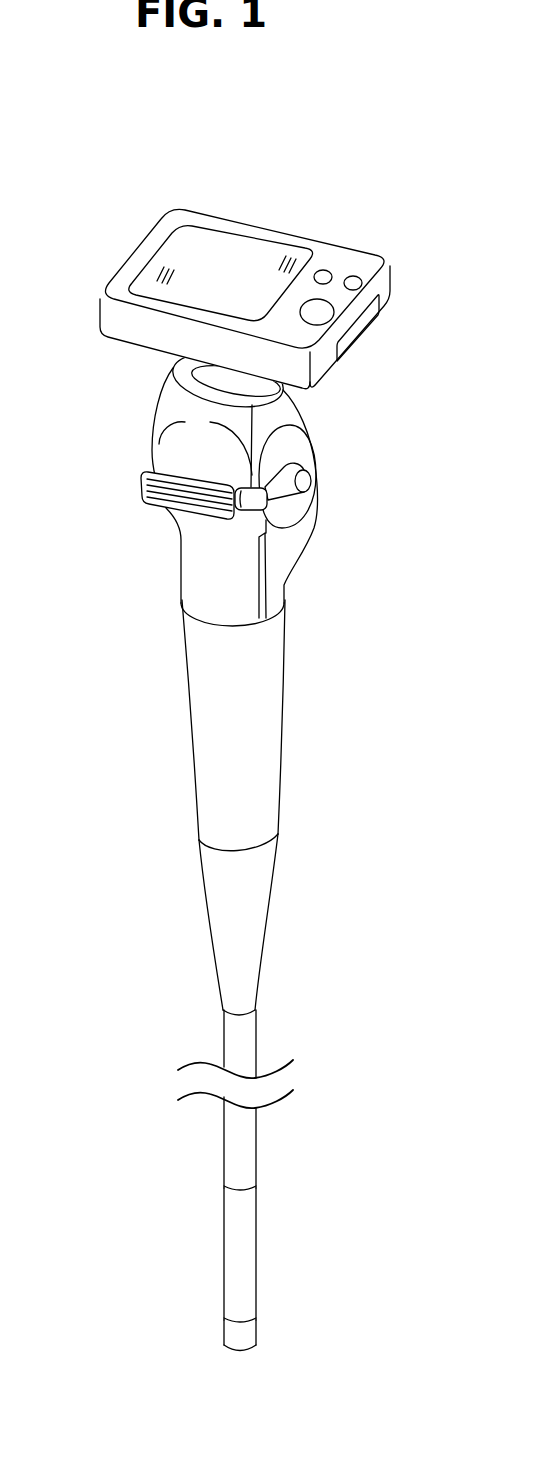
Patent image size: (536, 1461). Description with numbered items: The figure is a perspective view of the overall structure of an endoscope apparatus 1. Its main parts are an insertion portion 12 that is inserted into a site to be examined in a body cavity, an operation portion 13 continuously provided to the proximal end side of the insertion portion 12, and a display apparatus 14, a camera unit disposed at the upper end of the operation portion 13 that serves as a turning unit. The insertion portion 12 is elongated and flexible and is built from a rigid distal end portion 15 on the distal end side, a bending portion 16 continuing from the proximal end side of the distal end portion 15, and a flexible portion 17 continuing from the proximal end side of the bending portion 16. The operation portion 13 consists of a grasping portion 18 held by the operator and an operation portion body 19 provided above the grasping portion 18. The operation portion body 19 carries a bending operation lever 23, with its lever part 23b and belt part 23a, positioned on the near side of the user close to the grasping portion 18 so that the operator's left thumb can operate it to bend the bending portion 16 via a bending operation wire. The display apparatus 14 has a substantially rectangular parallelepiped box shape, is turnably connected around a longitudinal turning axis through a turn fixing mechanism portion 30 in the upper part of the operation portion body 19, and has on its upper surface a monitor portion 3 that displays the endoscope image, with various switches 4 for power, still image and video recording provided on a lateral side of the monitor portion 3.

The endoscope apparatus 1 is at (272, 157).
The monitor portion 3 is at (227, 247).
The operation buttons 4 is at (355, 272).
The insertion portion 12 is at (167, 1362).
The operation portion 13 is at (310, 754).
The display apparatus 14 is at (119, 240).
The distal end portion 15 is at (223, 1335).
The bending portion 16 is at (223, 1250).
The flexible portion 17 is at (222, 1037).
The grasping portion 18 is at (192, 737).
The operation portion body 19 is at (181, 567).
The bending operation lever 23 is at (358, 463).
The finger belt 23a is at (204, 524).
The bending operation lever 23b is at (300, 493).
The turn fixing mechanism portion 30 is at (253, 385).